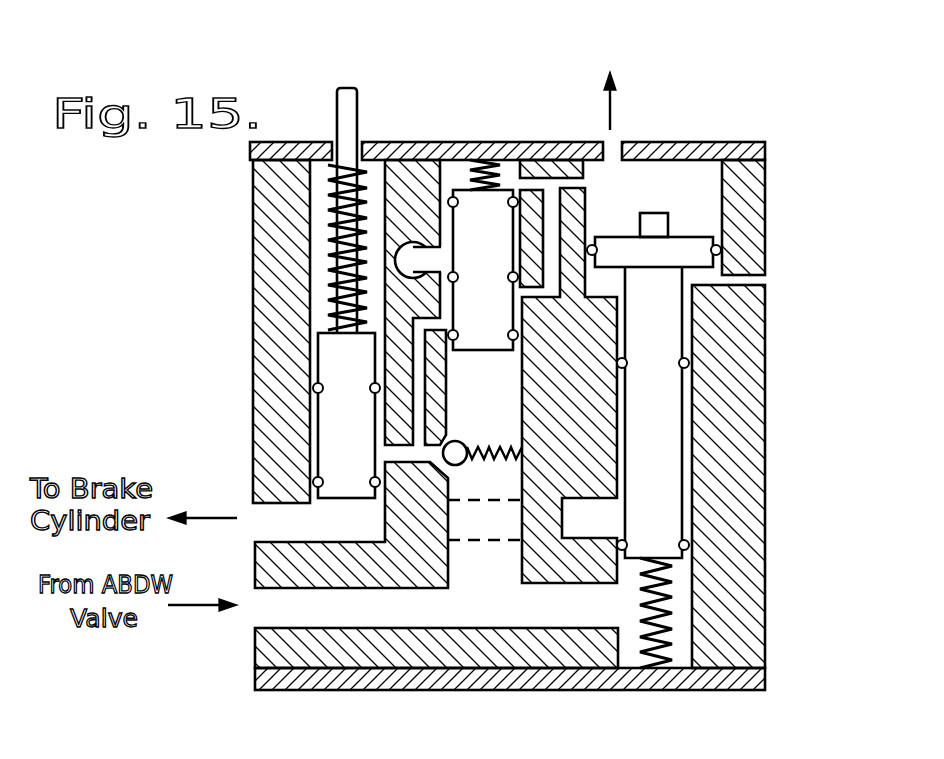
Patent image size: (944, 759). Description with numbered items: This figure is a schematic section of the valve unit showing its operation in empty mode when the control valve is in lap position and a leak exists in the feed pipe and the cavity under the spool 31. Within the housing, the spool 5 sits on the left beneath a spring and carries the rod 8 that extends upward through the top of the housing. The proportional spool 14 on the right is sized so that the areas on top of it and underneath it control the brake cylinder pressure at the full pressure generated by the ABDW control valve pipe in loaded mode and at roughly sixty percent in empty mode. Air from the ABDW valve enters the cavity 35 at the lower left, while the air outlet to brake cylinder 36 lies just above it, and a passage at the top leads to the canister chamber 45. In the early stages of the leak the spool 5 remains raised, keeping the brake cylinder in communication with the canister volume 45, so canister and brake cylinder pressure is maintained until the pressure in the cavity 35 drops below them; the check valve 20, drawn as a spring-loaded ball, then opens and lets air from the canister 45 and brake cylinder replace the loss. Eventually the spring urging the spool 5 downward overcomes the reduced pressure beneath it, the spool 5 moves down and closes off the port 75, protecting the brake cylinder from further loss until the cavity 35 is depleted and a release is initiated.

The spool 5 is at (332, 360).
The rod 8 is at (350, 113).
The proportional spool 14 is at (675, 450).
The check valve 20 is at (459, 442).
The spool 31 is at (530, 318).
The air inlet/outlet from ABDW valve 35 is at (260, 617).
The air outlet to brake cylinder 36 is at (258, 512).
The canister chamber 45 is at (669, 85).
The port 75 is at (400, 498).